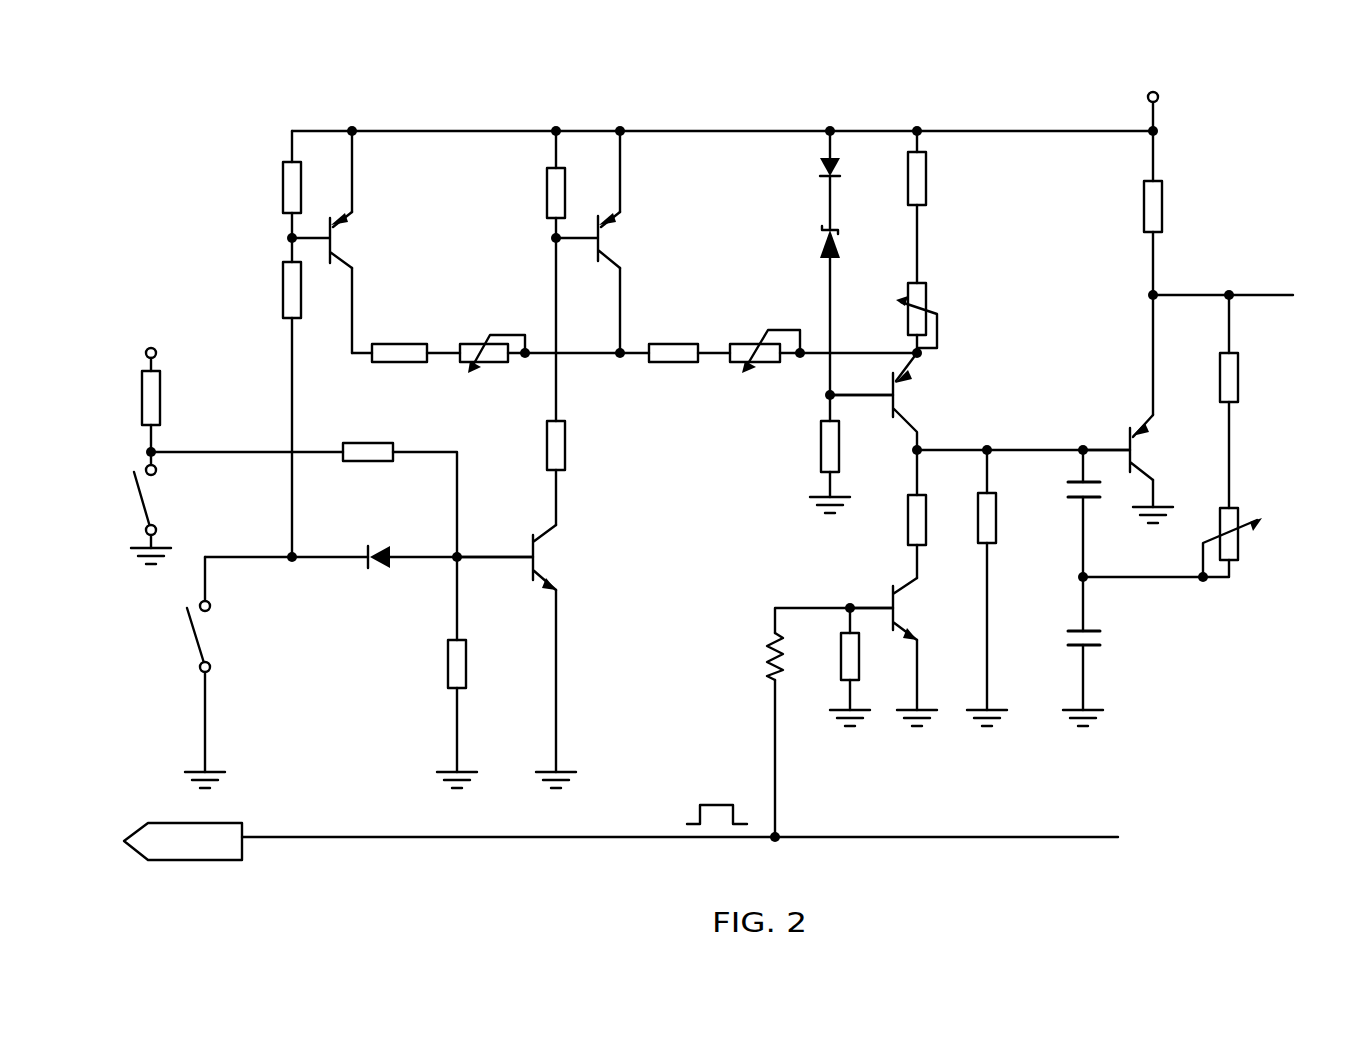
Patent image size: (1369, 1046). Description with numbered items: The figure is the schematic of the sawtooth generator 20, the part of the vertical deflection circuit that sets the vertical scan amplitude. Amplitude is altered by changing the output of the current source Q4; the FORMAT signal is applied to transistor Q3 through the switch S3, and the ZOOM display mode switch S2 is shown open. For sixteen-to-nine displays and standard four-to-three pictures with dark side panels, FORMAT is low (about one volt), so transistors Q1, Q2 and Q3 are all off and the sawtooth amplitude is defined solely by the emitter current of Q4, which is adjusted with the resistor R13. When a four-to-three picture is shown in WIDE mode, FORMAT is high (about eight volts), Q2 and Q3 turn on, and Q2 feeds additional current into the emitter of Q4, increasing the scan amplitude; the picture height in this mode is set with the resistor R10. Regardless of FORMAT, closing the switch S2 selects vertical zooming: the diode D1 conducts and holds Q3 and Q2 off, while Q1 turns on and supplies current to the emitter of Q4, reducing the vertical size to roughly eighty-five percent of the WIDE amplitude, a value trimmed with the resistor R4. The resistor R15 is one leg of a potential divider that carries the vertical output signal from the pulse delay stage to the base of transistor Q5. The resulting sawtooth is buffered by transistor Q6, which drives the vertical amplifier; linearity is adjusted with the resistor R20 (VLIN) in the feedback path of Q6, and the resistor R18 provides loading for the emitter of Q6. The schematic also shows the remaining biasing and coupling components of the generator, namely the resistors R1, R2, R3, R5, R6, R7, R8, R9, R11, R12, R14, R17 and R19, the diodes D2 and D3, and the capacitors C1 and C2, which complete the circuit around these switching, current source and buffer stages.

The sawtooth generator 20 is at (717, 541).
The resistor 2.2K R1 is at (271, 189).
The resistor 10K R2 is at (275, 288).
The resistor 120K R3 is at (399, 323).
The resistor R4 is at (492, 323).
The resistor 15K R5 is at (368, 422).
The resistor 2.2K R6 is at (437, 662).
The resistor 2.2K R7 is at (536, 194).
The resistor 10K R8 is at (576, 446).
The resistor 180K R9 is at (673, 322).
The resistor R10 is at (765, 322).
The resistor 1K R11 is at (813, 452).
The resistor 68K R12 is at (939, 179).
The resistor R13 is at (930, 302).
The resistor 10K R14 is at (899, 520).
The resistor R15 is at (751, 658).
The resistor 330K R17 is at (1010, 533).
The resistor R18 is at (985, 433).
The resistor 12K R19 is at (1249, 378).
The resistor (VLIN) R20 is at (1243, 550).
The transistor Q1 is at (351, 238).
The transistor Q2 is at (617, 238).
The transistor Q3 is at (537, 557).
The current source Q4 is at (902, 401).
The transistor Q5 is at (913, 608).
The transistor Q6 is at (1147, 447).
The diode D1 is at (379, 530).
The diode 1N4148 D2 is at (799, 167).
The zener diode 5.1V D3 is at (810, 244).
The capacitor 470n C1 is at (1061, 483).
The capacitor 470n C2 is at (1061, 637).
The ZOOM display mode switch S2 is at (185, 664).
The switch S3 is at (132, 502).